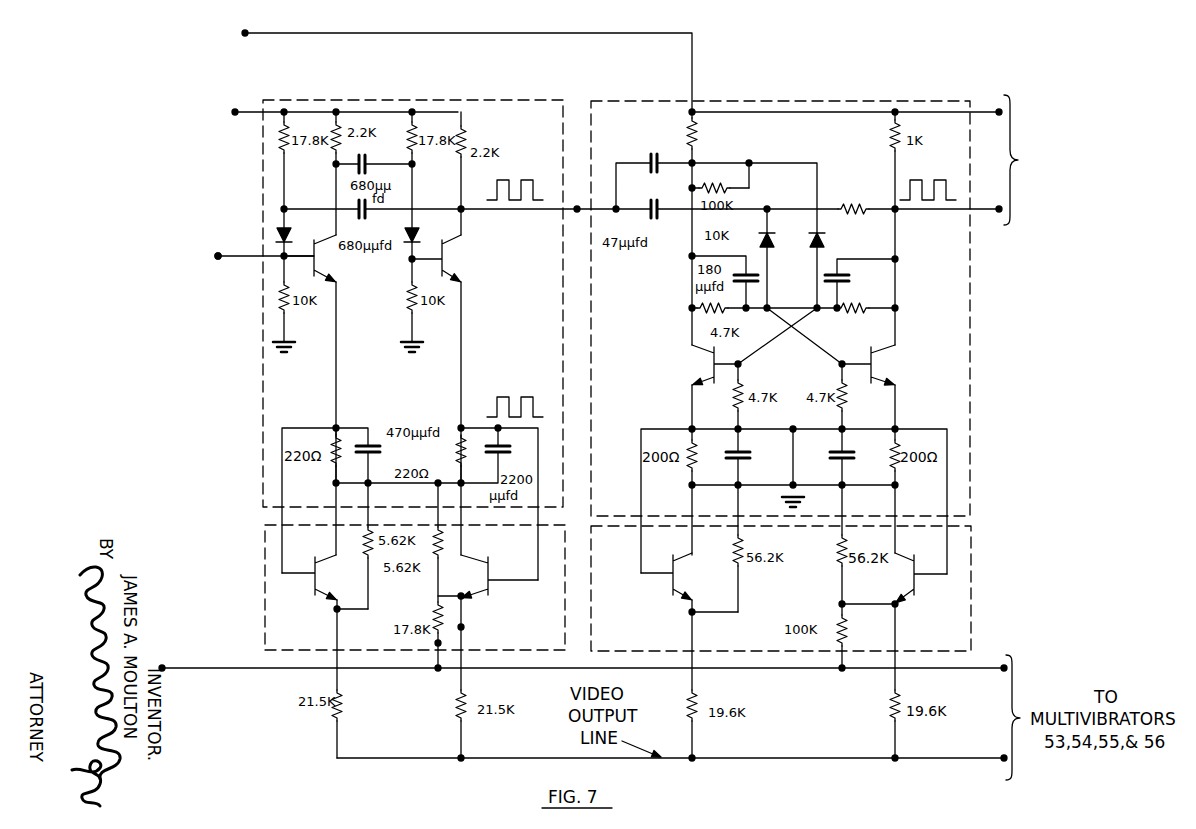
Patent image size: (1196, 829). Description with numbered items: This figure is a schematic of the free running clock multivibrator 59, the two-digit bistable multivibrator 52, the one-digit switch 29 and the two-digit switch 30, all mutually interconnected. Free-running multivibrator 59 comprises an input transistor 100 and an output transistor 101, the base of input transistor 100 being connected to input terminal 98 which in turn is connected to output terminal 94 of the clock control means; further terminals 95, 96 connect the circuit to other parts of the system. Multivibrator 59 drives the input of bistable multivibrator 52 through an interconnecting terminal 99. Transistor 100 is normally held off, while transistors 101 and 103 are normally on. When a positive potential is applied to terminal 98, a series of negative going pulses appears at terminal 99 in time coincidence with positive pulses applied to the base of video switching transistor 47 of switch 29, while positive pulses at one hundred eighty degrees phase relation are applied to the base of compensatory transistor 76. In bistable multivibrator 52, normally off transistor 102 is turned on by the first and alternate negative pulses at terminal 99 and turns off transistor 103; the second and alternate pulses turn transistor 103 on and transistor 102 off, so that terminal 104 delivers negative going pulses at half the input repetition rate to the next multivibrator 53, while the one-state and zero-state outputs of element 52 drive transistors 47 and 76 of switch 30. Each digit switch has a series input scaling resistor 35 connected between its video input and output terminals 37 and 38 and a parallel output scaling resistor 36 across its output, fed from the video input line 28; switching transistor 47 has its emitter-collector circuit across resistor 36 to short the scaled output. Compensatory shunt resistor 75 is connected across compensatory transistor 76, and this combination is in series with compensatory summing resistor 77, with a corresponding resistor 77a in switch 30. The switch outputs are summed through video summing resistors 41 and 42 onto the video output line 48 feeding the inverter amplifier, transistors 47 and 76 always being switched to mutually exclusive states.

The terminal 95 of FIG. 6 95 is at (245, 33).
The terminal 96 of FIG. 6 96 is at (235, 112).
The output terminal 94 is at (218, 256).
The input terminal 98 is at (218, 258).
The free running clock multivibrator 59 is at (450, 100).
The 2-digit bistable multivibrator 52 is at (823, 101).
The 1-digit switch 29 is at (265, 527).
The 2-digit switch 30 is at (971, 528).
The interconnecting terminal 99 is at (576, 211).
The output terminal 104 is at (999, 211).
The input transistor 100 is at (316, 248).
The output transistor 101 is at (446, 261).
The transistor 102 is at (712, 359).
The transistor 103 is at (876, 362).
The compensatory switching transistor 76 is at (314, 564).
The switching transistor 47 is at (483, 562).
The compensatory shunt resistor 75 is at (366, 565).
The parallel output scaling resistor 36 is at (440, 562).
The series input scaling resistor 35 is at (420, 613).
The video input terminal 37 is at (437, 648).
The video output terminal 38 is at (461, 627).
The compensatory summing resistor 77 is at (343, 714).
The video summing resistor 41 is at (457, 717).
The resistor 77a is at (696, 697).
The video summing resistor 42 is at (899, 697).
The video output line 48 is at (770, 758).
The video input line 28 is at (583, 691).
The multivibrator 53 is at (1080, 160).